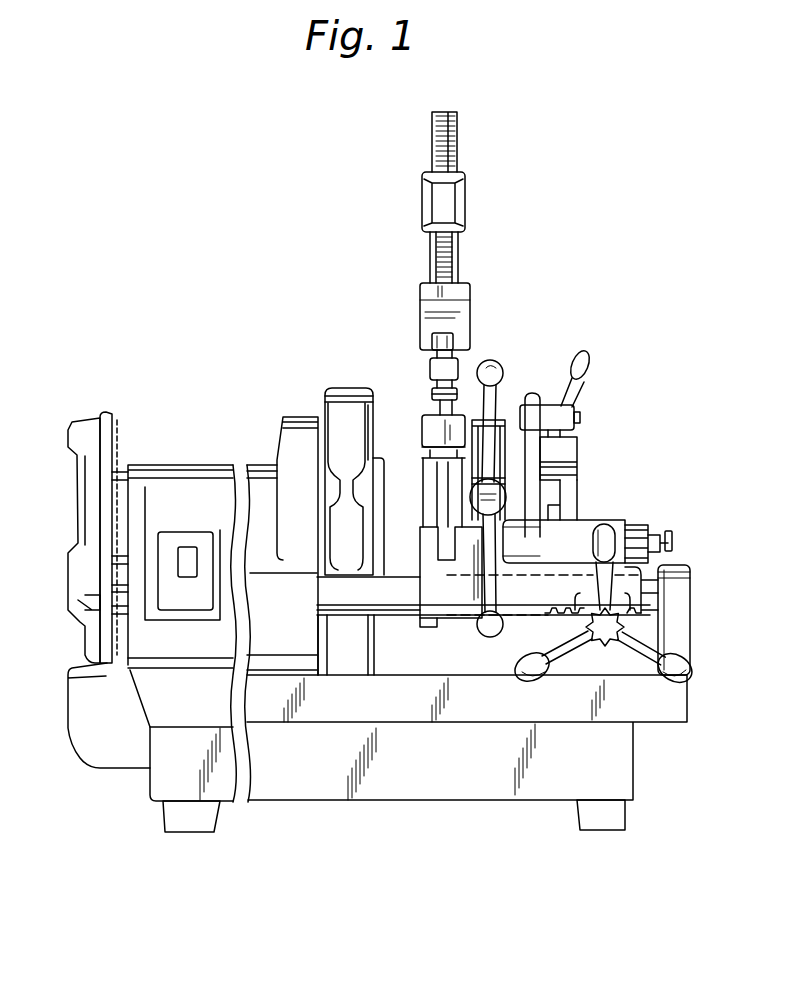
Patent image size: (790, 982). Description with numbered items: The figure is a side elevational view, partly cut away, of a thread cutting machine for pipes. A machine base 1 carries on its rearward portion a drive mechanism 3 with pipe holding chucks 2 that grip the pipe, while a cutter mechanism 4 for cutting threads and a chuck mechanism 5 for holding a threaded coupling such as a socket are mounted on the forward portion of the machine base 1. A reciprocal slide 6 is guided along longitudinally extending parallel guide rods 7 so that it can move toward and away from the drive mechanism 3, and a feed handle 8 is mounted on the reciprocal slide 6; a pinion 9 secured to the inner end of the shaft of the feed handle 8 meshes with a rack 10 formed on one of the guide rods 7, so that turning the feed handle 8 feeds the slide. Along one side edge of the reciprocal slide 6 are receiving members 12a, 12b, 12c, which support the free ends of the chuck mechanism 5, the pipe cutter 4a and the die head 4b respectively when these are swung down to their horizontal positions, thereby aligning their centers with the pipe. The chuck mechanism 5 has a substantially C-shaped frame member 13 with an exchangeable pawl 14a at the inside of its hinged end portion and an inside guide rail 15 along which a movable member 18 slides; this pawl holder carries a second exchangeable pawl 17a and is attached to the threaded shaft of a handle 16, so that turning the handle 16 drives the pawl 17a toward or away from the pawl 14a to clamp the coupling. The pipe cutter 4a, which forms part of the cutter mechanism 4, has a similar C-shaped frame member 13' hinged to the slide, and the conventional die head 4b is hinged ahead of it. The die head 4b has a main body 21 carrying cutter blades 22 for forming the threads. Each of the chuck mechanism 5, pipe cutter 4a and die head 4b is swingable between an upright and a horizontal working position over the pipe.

The machine base 1 is at (481, 788).
The pipe holding chuck 2 is at (88, 418).
The drive mechanism 3 is at (214, 465).
The cutter mechanism 4 is at (617, 311).
The pipe cutter 4a is at (503, 419).
The die head 4b is at (585, 416).
The chuck mechanism 5 is at (487, 167).
The reciprocal slide 6 is at (460, 603).
The guide rod 7 is at (367, 600).
The feed handle 8 is at (578, 648).
The pinion 9 is at (603, 632).
The rack 10 is at (553, 613).
The receiving member 12a is at (427, 553).
The receiving member 12b is at (507, 548).
The receiving member 12c is at (560, 545).
The frame member 13 is at (469, 202).
The frame member 13' is at (425, 447).
The pawl 14a is at (437, 393).
The guide rail 15 is at (463, 252).
The handle 16 is at (524, 326).
The pawl 17a is at (453, 336).
The movable member 18 is at (427, 322).
The main body 21 is at (567, 497).
The cutter blade 22 is at (567, 467).